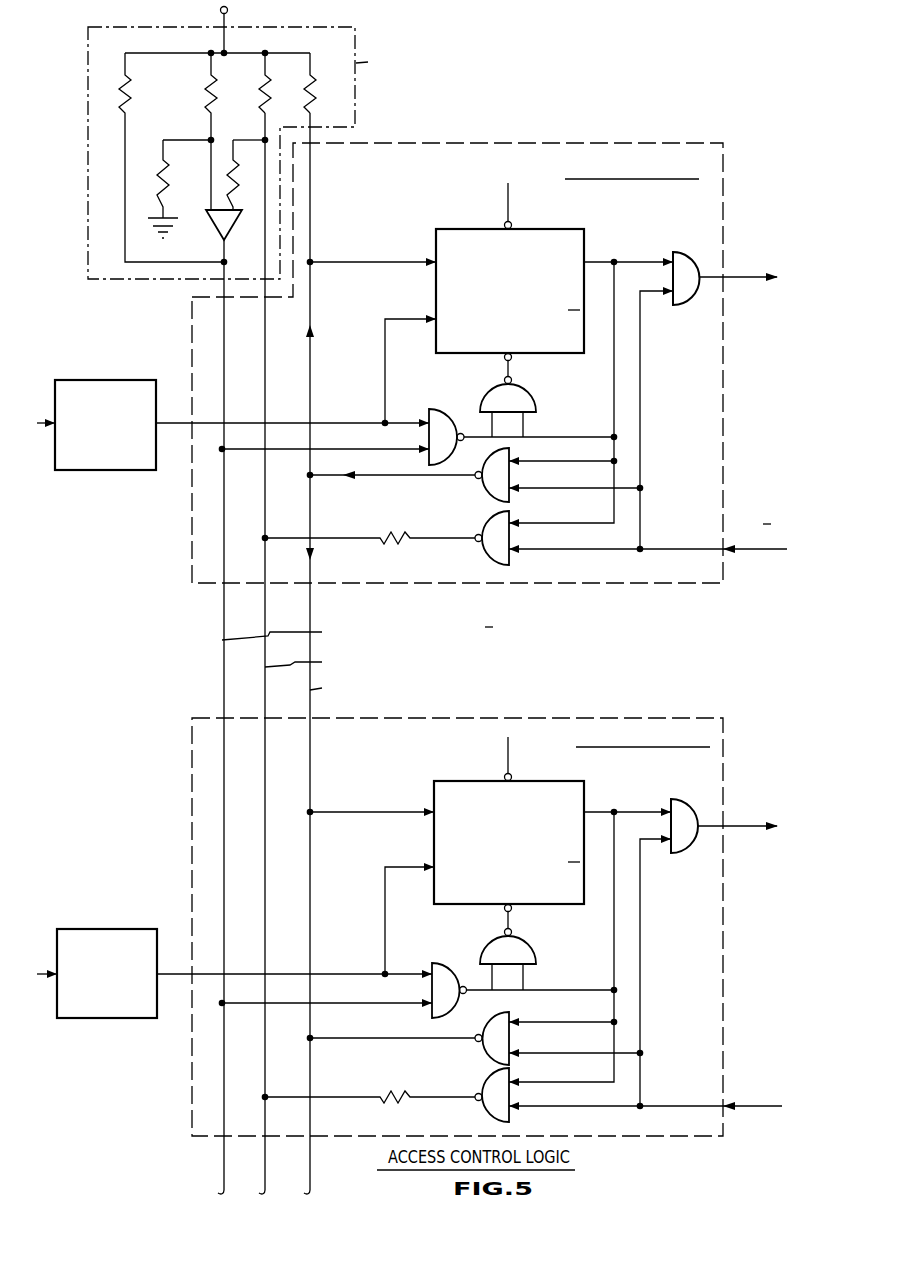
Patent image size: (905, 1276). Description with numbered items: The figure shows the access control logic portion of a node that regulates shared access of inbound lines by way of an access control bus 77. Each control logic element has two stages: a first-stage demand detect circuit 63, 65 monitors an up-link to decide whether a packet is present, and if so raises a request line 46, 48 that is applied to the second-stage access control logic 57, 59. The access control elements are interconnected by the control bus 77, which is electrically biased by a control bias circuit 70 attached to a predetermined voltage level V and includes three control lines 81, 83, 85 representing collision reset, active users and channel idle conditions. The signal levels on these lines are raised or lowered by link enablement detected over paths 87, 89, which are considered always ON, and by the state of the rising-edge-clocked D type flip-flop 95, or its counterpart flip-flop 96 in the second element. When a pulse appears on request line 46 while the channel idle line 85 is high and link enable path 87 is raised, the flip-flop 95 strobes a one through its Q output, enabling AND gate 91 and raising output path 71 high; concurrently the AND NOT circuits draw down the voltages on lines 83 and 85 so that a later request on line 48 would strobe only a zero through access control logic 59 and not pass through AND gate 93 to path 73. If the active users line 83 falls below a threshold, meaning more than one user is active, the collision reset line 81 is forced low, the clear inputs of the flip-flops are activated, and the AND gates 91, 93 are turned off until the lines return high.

The control bias circuit 70 is at (88, 96).
The access control logic 57 is at (575, 143).
The access control logic 59 is at (589, 718).
The flip-flop 95 is at (482, 229).
The D flip-flop 96 is at (485, 781).
The AND gate 91 is at (684, 257).
The AND gate 93 is at (684, 805).
The output path 71 is at (733, 283).
The output path 73 is at (733, 832).
The demand detect circuit 63 is at (100, 380).
The demand detect circuit 65 is at (103, 930).
The request line 46 is at (184, 423).
The request line 48 is at (184, 974).
The access control bus 77 is at (337, 653).
The collision reset line 81 is at (222, 778).
The active users line 83 is at (265, 778).
The channel idle line 85 is at (310, 778).
The link enable path 87 is at (744, 552).
The link enable path 89 is at (744, 1109).